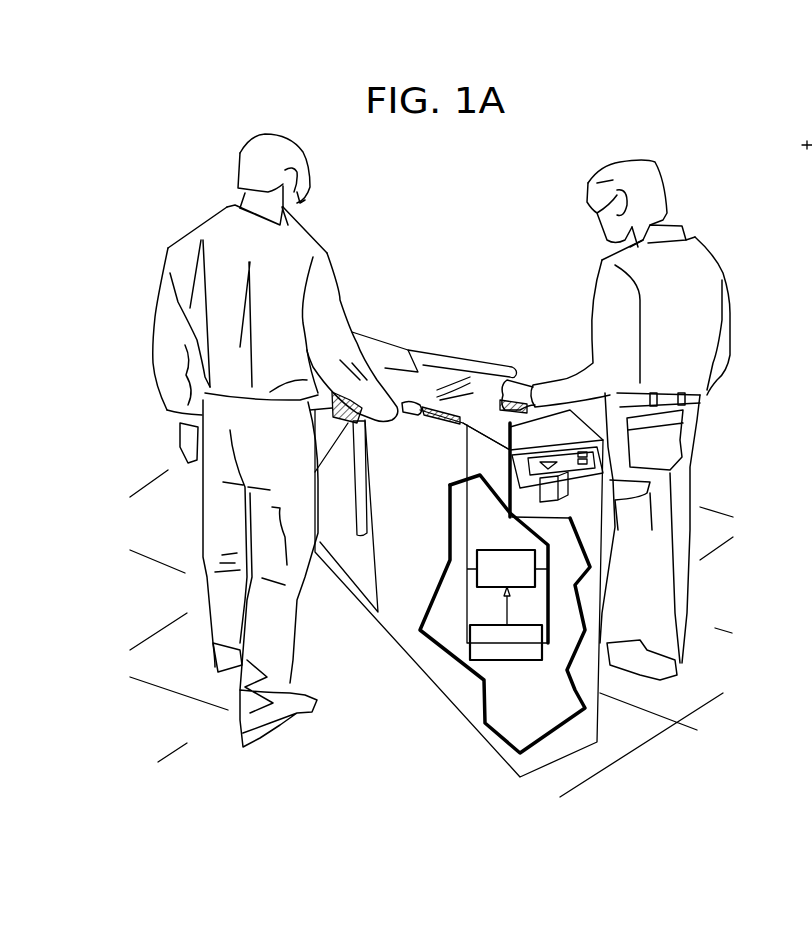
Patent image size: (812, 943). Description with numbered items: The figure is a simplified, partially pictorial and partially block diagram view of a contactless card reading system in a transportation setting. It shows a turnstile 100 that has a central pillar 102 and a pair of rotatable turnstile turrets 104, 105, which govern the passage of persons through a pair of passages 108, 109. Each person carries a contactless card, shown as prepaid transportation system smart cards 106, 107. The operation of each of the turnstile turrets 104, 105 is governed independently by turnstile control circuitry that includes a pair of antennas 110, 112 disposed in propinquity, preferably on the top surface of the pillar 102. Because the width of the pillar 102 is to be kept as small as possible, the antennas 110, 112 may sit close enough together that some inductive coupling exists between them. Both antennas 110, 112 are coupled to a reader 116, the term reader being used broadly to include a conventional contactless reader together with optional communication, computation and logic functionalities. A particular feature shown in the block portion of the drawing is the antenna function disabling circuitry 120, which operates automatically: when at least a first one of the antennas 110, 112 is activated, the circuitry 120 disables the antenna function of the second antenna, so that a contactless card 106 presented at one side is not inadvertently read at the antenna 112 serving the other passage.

The turnstile 100 is at (463, 300).
The central pillar 102 is at (375, 343).
The turnstile turret 104 is at (345, 428).
The turnstile turret 105 is at (467, 375).
The prepaid transportation system smart card 106 is at (417, 413).
The prepaid transportation system smart card 107 is at (500, 397).
The passage 108 is at (307, 670).
The passage 109 is at (698, 655).
The antenna 110 is at (440, 423).
The antenna 112 is at (557, 387).
The reader 116 is at (483, 625).
The antenna function disabling circuitry 120 is at (485, 548).